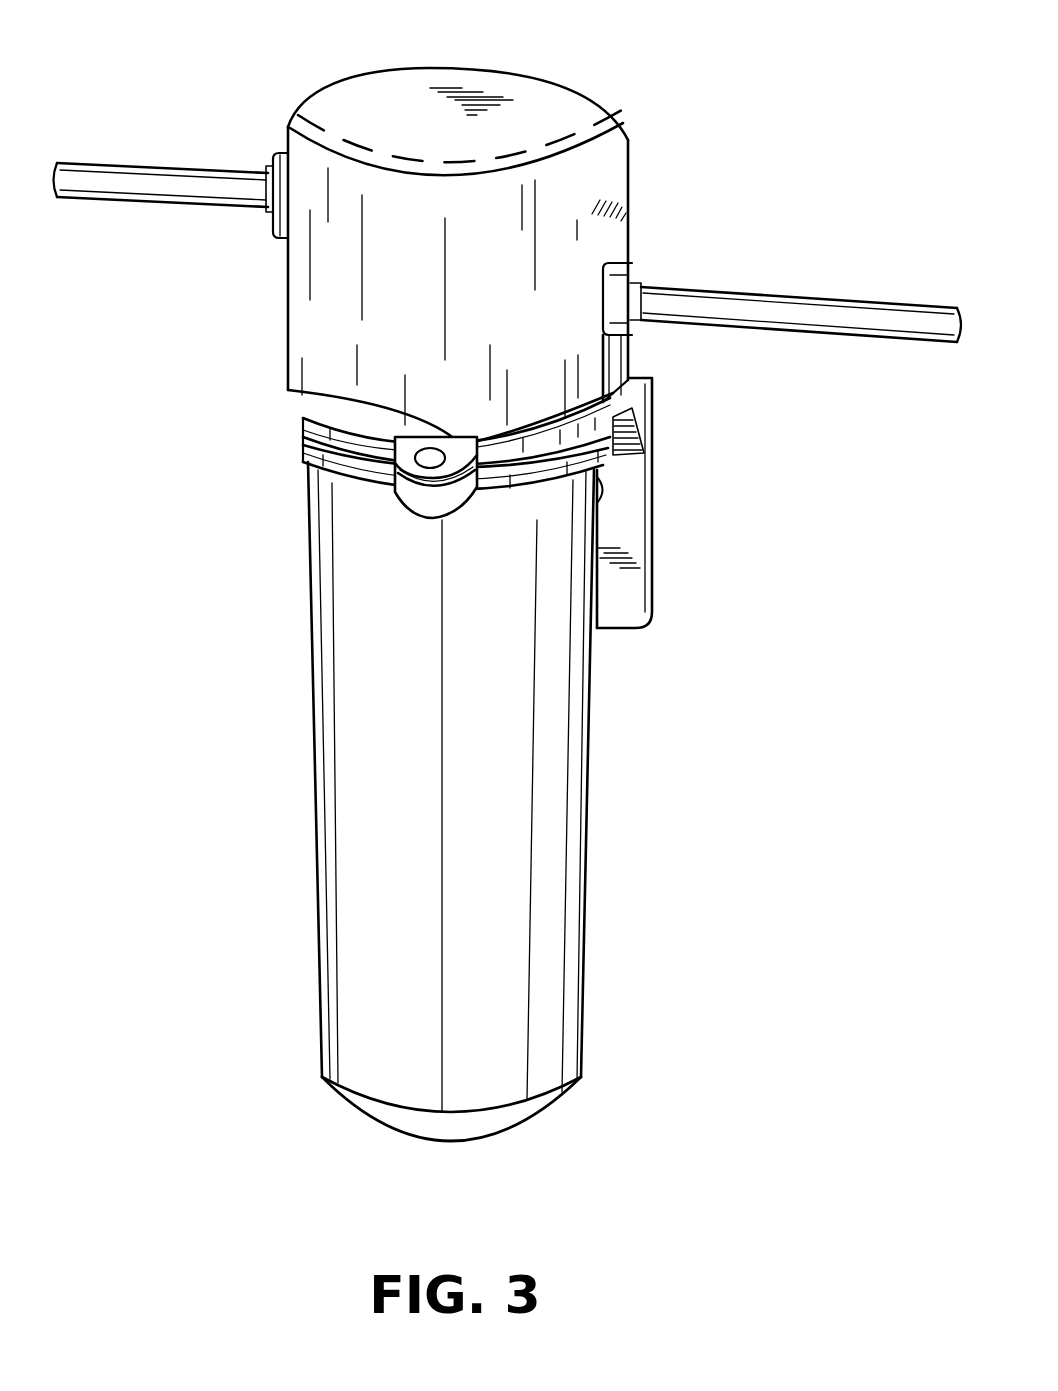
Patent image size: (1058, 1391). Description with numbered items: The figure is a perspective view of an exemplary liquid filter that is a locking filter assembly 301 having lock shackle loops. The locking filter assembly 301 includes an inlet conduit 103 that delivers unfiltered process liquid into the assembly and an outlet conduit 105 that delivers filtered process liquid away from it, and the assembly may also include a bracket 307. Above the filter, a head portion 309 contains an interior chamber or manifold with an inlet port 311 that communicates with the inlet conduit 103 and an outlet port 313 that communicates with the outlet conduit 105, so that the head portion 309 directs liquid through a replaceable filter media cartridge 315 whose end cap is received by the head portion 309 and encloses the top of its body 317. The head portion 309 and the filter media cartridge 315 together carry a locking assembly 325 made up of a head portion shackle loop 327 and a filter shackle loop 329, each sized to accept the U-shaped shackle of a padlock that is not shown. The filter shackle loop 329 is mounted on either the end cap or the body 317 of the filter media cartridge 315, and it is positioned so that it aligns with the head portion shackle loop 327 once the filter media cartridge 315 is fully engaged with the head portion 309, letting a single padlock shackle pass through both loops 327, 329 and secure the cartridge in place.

The inlet conduit 103 is at (798, 313).
The outlet conduit 105 is at (125, 187).
The locking filter assembly 301 is at (676, 212).
The bracket 307 is at (632, 518).
The head portion 309 is at (387, 96).
The inlet port 311 is at (637, 272).
The outlet port 313 is at (280, 163).
The filter media cartridge 315 is at (352, 849).
The body 317 is at (550, 672).
The locking assembly 325 is at (168, 361).
The head portion shackle loop 327 is at (452, 447).
The filter shackle loop 329 is at (413, 513).